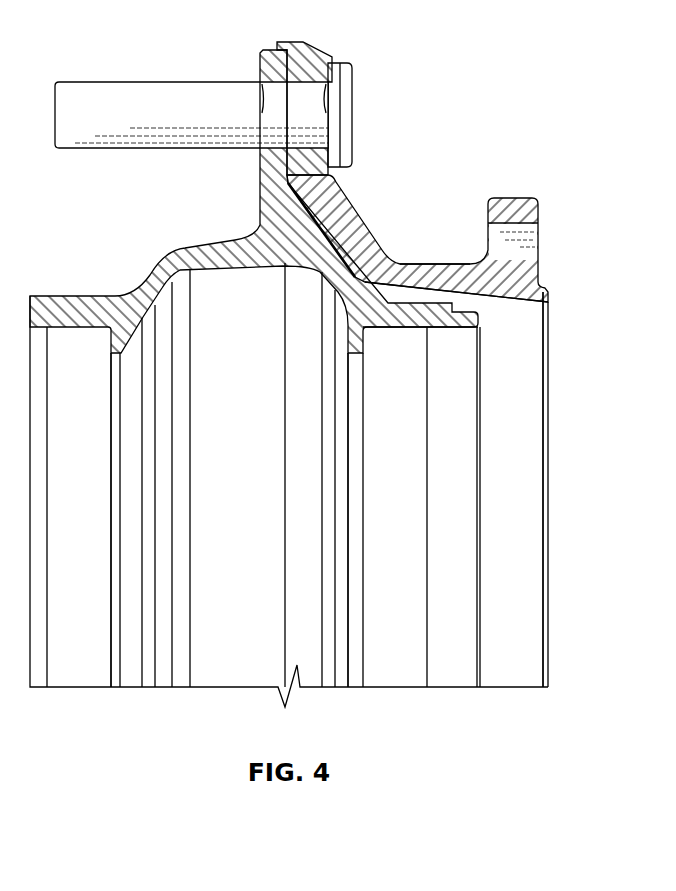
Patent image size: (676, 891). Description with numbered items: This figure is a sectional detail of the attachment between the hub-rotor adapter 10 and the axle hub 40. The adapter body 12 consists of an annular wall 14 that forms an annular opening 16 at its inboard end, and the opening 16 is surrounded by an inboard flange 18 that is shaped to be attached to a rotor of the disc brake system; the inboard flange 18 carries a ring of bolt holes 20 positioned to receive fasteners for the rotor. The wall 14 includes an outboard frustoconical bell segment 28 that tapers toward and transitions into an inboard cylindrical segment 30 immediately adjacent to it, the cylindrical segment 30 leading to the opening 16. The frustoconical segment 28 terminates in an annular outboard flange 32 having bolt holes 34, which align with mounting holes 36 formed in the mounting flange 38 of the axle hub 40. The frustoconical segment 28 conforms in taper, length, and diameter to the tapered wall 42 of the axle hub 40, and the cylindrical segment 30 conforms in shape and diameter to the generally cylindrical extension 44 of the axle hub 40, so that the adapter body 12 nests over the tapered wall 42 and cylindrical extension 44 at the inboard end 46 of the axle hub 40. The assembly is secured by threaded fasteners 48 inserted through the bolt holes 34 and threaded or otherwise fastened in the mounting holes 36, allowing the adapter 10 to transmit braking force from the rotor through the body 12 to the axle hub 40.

The hub-rotor adapter 10 is at (518, 698).
The adapter body 12 is at (523, 435).
The annular wall 14 is at (551, 625).
The annular opening 16 is at (527, 303).
The inboard flange 18 is at (510, 203).
The bolt holes 20 is at (533, 243).
The outboard frustoconical bell segment 28 is at (335, 223).
The inboard cylindrical segment 30 is at (427, 261).
The annular outboard flange 32 is at (315, 53).
The bolt holes 34 is at (325, 87).
The mounting holes 36 is at (258, 97).
The mounting flange 38 is at (268, 180).
The axle hub 40 is at (132, 668).
The tapered wall 42 is at (335, 272).
The cylindrical extension 44 is at (400, 328).
The inboard end 46 is at (342, 678).
The threaded fasteners 48 is at (103, 87).